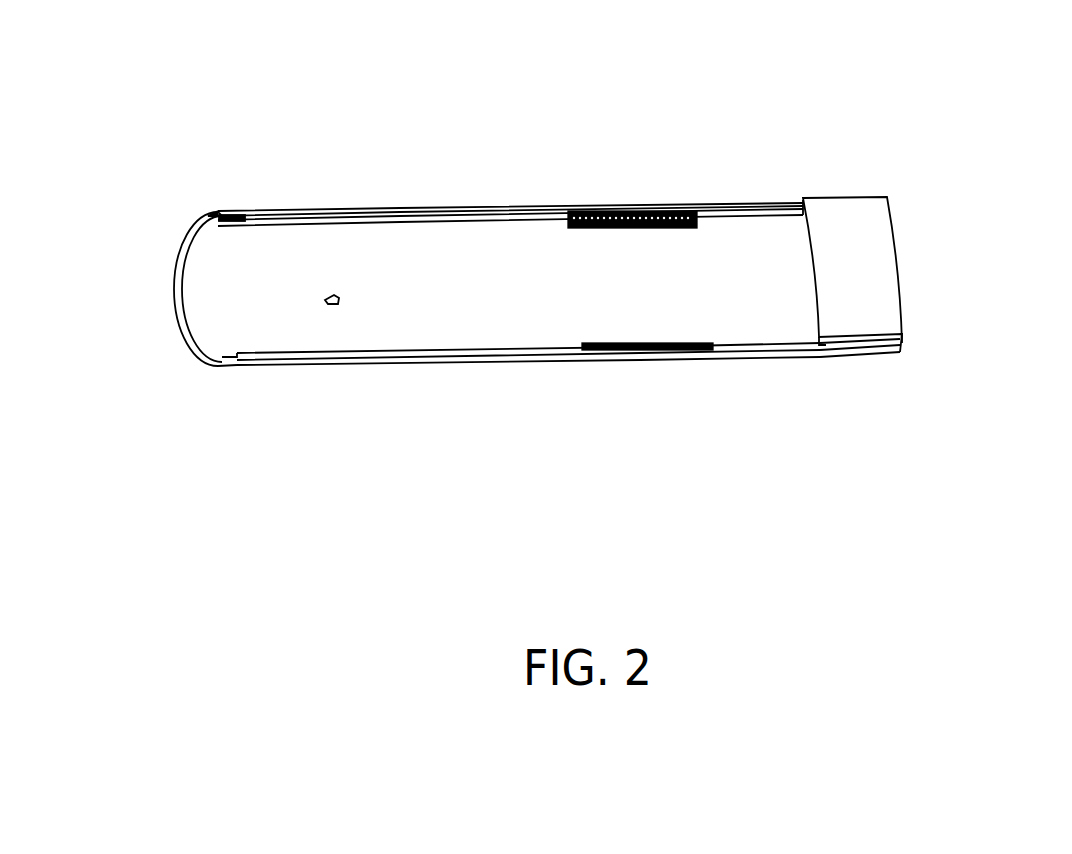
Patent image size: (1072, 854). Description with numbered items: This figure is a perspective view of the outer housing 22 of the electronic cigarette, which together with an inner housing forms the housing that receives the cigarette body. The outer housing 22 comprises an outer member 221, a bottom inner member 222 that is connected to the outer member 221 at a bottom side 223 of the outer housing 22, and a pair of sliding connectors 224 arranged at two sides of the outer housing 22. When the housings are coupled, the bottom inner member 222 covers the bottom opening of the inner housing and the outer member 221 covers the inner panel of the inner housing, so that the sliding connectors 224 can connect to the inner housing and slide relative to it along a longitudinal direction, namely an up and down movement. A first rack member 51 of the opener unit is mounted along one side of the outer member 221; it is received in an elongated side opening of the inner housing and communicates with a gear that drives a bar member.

The outer housing 22 is at (602, 302).
The outer member 221 is at (448, 332).
The bottom inner member 222 is at (863, 266).
The bottom side 223 is at (908, 361).
The sliding connectors 224 is at (338, 212).
The first rack member 51 is at (683, 212).